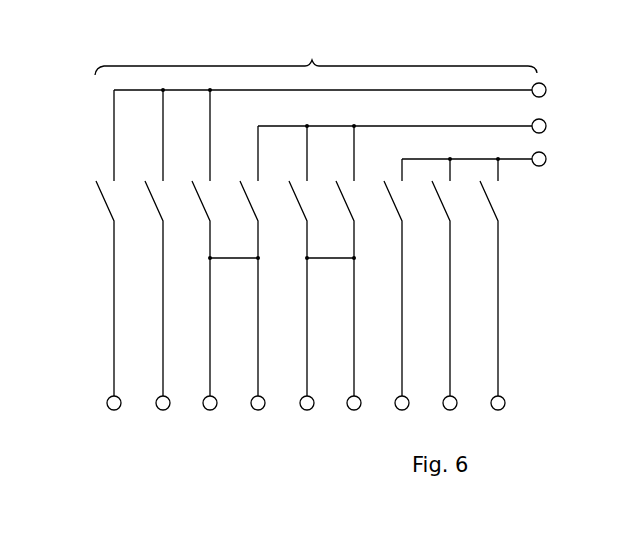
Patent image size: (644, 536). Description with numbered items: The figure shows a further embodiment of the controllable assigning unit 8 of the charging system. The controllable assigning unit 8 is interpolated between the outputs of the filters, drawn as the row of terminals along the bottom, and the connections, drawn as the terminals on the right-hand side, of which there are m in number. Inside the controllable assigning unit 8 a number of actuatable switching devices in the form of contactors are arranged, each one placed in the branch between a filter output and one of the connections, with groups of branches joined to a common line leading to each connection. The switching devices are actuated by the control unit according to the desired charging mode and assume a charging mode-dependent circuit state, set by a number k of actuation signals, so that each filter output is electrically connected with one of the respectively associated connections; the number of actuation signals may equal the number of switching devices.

The controllable assigning unit 8 is at (316, 98).